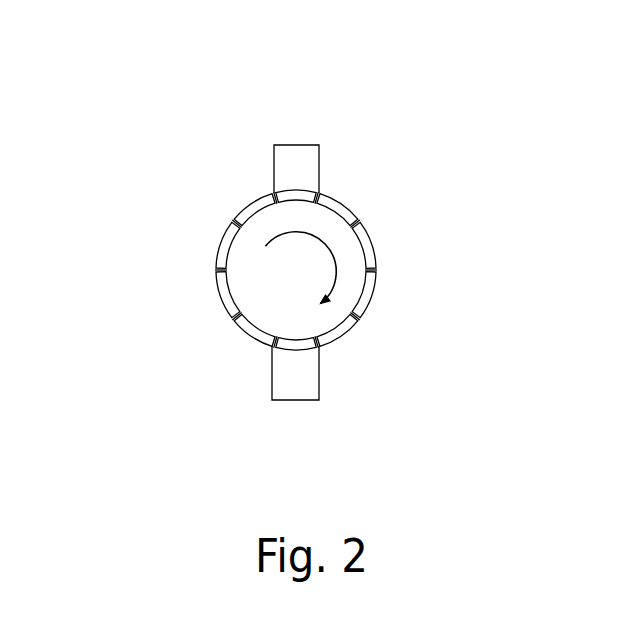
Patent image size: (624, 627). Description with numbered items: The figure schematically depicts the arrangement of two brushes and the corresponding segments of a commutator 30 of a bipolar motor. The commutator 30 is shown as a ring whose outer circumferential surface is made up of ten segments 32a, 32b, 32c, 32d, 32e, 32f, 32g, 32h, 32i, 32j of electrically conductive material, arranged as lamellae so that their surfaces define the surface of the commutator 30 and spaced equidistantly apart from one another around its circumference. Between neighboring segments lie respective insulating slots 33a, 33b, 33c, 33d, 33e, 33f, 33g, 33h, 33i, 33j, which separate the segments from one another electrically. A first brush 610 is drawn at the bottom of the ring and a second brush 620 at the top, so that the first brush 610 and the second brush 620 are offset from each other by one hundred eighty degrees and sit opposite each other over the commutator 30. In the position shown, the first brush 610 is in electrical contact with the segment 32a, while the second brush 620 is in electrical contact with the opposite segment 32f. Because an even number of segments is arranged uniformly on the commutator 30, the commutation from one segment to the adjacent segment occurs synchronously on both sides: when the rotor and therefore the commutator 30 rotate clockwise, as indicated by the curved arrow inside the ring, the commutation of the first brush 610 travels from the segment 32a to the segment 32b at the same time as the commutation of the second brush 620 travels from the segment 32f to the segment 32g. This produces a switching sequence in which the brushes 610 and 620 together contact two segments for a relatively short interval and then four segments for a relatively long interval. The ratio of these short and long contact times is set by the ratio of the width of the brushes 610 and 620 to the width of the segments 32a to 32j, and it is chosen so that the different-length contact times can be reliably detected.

The commutator 30 is at (312, 285).
The first brush 610 is at (297, 390).
The second brush 620 is at (297, 157).
The segment 32a is at (305, 344).
The segment 32b is at (335, 328).
The segment 32c is at (363, 293).
The segment 32d is at (364, 247).
The segment 32e is at (336, 211).
The segment 32f is at (314, 206).
The segment 32g is at (257, 211).
The segment 32h is at (230, 247).
The segment 32i is at (230, 294).
The segment 32j is at (256, 330).
The insulating slot 33a is at (320, 350).
The insulating slot 33b is at (359, 319).
The insulating slot 33c is at (376, 270).
The insulating slot 33d is at (359, 221).
The insulating slot 33e is at (320, 197).
The insulating slot 33f is at (273, 196).
The insulating slot 33g is at (233, 222).
The insulating slot 33h is at (217, 272).
The insulating slot 33i is at (233, 319).
The insulating slot 33j is at (272, 350).